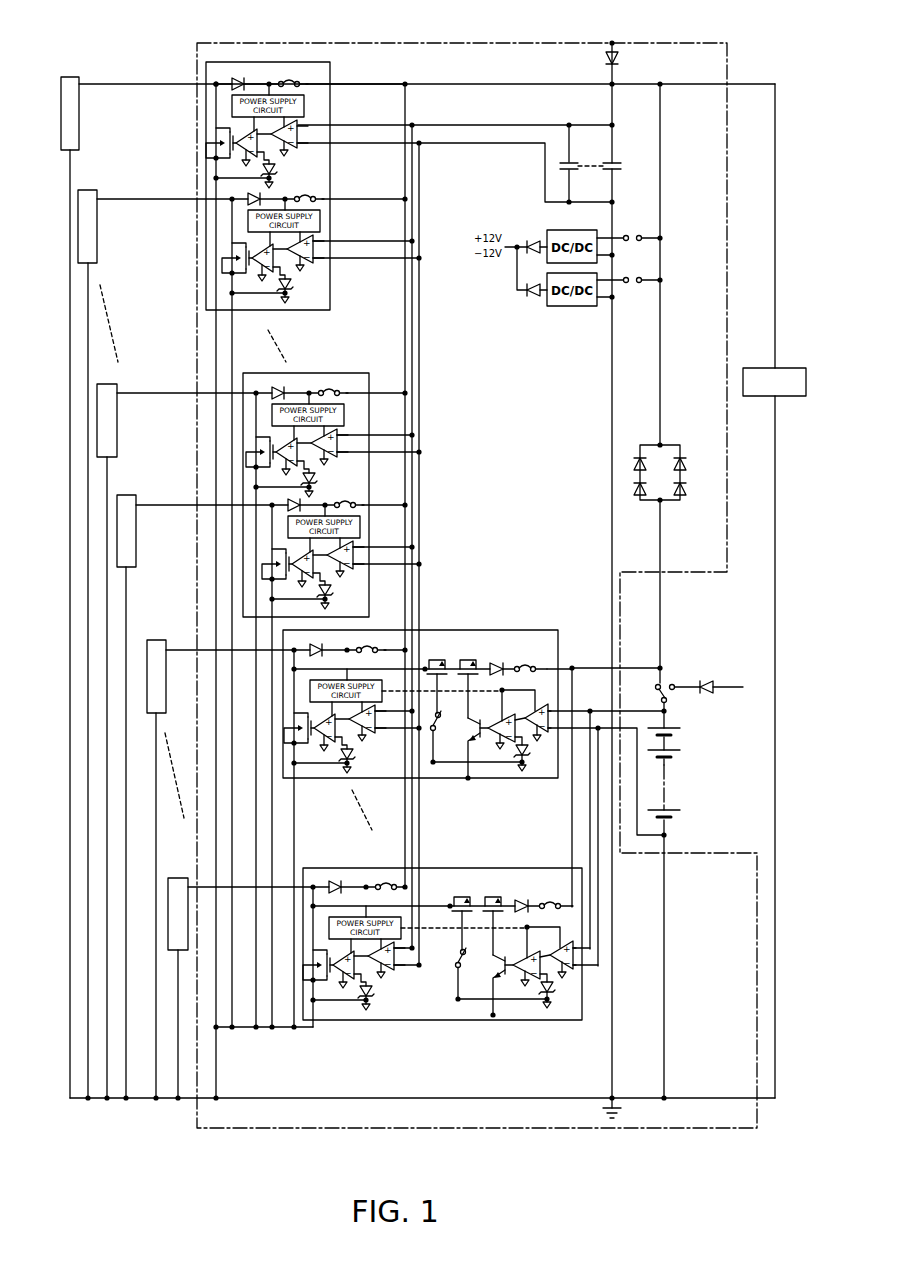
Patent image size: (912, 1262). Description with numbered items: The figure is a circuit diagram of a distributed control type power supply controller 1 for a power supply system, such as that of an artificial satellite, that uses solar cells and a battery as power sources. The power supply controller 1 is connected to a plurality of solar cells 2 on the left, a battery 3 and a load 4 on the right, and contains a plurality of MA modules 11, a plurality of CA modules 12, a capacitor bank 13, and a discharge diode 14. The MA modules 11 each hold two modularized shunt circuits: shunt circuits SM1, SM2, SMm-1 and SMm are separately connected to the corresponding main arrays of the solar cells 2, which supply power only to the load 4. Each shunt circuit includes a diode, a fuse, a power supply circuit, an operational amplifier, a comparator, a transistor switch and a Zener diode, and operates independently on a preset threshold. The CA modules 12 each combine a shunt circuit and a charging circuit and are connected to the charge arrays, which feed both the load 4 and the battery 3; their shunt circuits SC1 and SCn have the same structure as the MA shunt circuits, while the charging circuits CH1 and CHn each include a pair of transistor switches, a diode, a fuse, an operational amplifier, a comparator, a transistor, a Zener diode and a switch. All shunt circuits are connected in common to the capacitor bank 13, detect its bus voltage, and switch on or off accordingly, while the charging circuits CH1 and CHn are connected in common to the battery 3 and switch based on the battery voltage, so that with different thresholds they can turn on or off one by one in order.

The power supply controller 1 is at (380, 43).
The solar cells 2 is at (178, 38).
The battery 3 is at (696, 740).
The load 4 is at (797, 368).
The MA modules 11 is at (350, 544).
The CA modules 12 is at (440, 803).
The capacitor bank 13 is at (619, 151).
The discharge diode 14 is at (674, 434).
The shunt circuit SM1 is at (318, 109).
The shunt circuit SM2 is at (328, 232).
The shunt circuit SMm-1 is at (352, 421).
The shunt circuit SMm is at (370, 528).
The shunt circuit SC1 is at (381, 631).
The charging circuit CH1 is at (491, 653).
The shunt circuit SCn is at (372, 869).
The charging circuit CHn is at (487, 880).